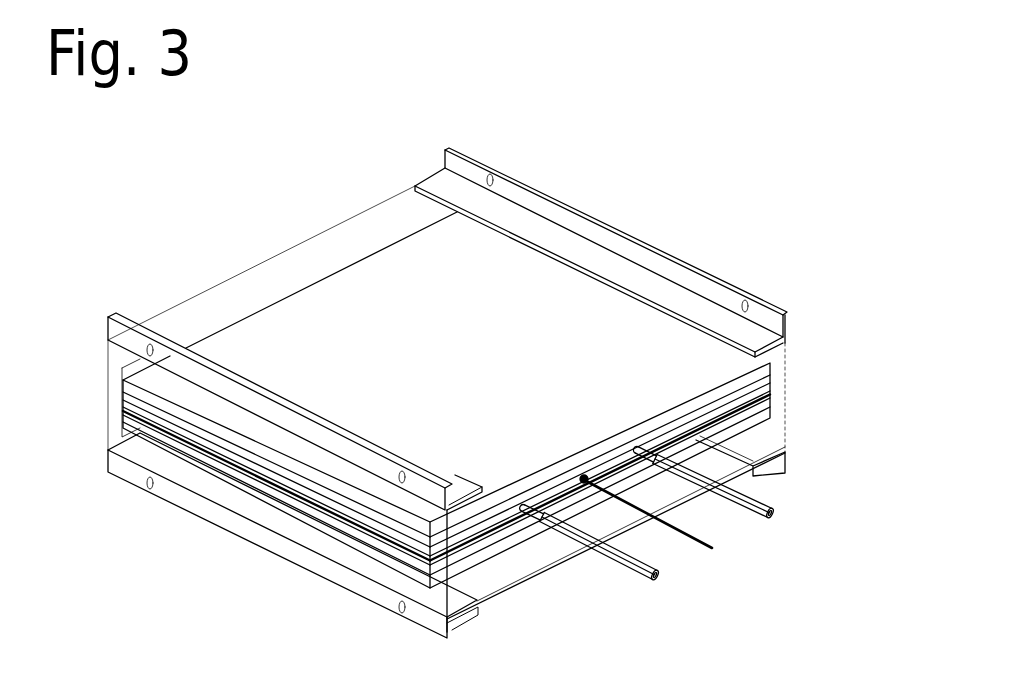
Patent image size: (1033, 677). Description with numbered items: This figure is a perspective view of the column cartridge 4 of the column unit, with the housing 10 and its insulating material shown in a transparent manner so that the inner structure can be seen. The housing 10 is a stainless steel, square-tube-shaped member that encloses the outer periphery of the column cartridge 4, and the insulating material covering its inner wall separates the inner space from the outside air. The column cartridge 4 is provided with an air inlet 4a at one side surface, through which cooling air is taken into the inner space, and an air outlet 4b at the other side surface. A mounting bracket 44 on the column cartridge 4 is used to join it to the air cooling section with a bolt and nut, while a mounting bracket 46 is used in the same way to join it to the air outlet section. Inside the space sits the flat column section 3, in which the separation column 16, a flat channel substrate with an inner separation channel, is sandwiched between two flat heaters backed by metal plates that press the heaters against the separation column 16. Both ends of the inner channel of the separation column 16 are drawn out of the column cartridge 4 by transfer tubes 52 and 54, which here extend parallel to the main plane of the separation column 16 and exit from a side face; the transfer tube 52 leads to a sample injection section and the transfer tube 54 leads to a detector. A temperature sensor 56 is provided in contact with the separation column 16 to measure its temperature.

The column section 3 is at (160, 433).
The column cartridge 4 is at (617, 212).
The air inlet 4a is at (158, 391).
The air outlet 4b is at (793, 357).
The housing 10 is at (635, 327).
The separation column 16 is at (232, 457).
The mounting bracket 44 is at (115, 329).
The mounting bracket 46 is at (430, 171).
The transfer tube 52 is at (633, 571).
The transfer tube 54 is at (750, 514).
The temperature sensor 56 is at (587, 482).